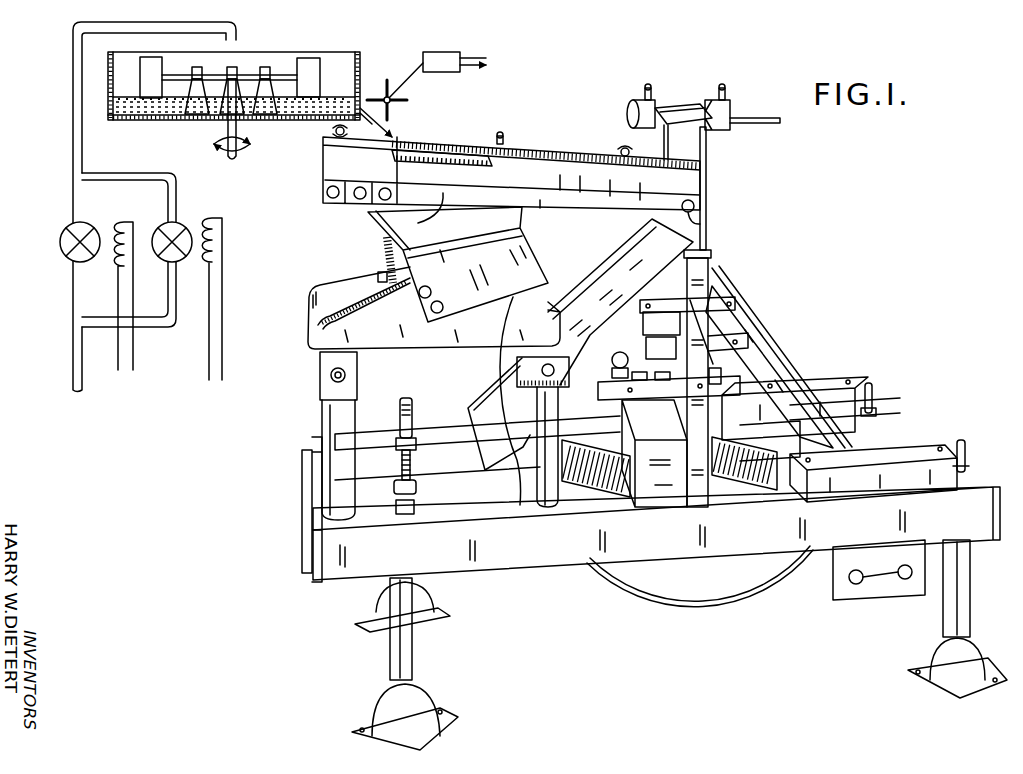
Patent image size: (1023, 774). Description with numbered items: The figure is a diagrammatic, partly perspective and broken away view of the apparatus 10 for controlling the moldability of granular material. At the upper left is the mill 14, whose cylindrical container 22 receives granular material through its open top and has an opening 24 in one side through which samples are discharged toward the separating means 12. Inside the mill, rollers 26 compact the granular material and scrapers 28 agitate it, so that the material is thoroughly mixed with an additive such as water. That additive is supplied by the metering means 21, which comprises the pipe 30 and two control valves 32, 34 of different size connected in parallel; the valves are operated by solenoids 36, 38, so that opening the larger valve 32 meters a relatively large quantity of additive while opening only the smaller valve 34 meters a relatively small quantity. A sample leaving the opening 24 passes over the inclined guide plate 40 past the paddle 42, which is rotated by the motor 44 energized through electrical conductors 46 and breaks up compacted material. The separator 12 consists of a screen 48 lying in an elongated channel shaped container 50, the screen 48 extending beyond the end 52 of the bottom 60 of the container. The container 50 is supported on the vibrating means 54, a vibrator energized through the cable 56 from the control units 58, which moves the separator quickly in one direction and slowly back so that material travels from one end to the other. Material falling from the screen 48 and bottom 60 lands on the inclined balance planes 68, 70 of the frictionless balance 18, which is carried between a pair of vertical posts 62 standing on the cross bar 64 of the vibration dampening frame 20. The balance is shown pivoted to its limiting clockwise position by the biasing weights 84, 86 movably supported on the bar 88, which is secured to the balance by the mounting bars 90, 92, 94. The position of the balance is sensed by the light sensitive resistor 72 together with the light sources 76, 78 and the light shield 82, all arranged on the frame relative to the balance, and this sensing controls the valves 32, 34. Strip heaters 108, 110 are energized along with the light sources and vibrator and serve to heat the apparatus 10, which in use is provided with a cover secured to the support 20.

The apparatus 10 is at (805, 218).
The separating means 12 is at (517, 150).
The mill 14 is at (165, 125).
The frictionless balance 18 is at (760, 334).
The vibration dampening frame 20 is at (462, 568).
The metering means 21 is at (68, 178).
The cylindrical container 22 is at (345, 53).
The opening 24 is at (352, 102).
The rollers 26 is at (306, 58).
The scrapers 28 is at (274, 120).
The pipe 30 is at (73, 105).
The control valve 32 is at (60, 241).
The control valve 34 is at (158, 255).
The solenoid 36 is at (126, 221).
The solenoid 38 is at (202, 218).
The inclined guide plate 40 is at (389, 122).
The paddle 42 is at (407, 101).
The motor 44 is at (445, 52).
The electrical conductors 46 is at (470, 65).
The screen 48 is at (437, 157).
The elongated channel shaped container 50 is at (553, 153).
The end 52 is at (695, 222).
The vibrating means 54 is at (522, 240).
The cable 56 is at (497, 368).
The control units 58 is at (905, 450).
The bottom 60 is at (425, 205).
The vertical posts 62 is at (722, 299).
The cross bar 64 is at (660, 487).
The inclined balance plane 68 is at (788, 372).
The inclined balance plane 70 is at (602, 286).
The light sensitive resistor 72 is at (660, 337).
The light source 76 is at (710, 370).
The light source 78 is at (605, 372).
The light shield 82 is at (631, 362).
The biasing weight 84 is at (630, 104).
The biasing weight 86 is at (733, 108).
The bar 88 is at (752, 123).
The mounting bar 90 is at (688, 105).
The mounting bar 92 is at (707, 160).
The mounting bar 94 is at (672, 300).
The strip heater 108 is at (595, 440).
The strip heater 110 is at (735, 480).